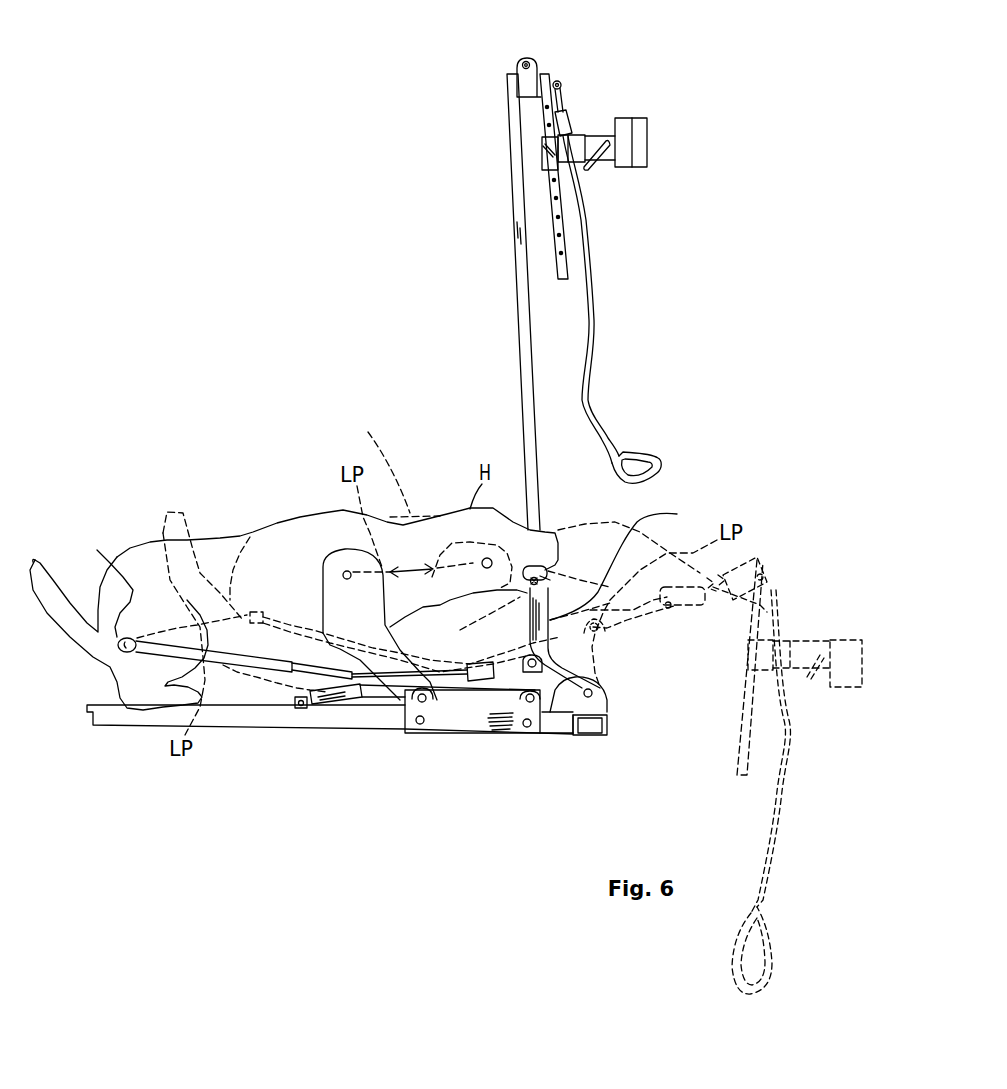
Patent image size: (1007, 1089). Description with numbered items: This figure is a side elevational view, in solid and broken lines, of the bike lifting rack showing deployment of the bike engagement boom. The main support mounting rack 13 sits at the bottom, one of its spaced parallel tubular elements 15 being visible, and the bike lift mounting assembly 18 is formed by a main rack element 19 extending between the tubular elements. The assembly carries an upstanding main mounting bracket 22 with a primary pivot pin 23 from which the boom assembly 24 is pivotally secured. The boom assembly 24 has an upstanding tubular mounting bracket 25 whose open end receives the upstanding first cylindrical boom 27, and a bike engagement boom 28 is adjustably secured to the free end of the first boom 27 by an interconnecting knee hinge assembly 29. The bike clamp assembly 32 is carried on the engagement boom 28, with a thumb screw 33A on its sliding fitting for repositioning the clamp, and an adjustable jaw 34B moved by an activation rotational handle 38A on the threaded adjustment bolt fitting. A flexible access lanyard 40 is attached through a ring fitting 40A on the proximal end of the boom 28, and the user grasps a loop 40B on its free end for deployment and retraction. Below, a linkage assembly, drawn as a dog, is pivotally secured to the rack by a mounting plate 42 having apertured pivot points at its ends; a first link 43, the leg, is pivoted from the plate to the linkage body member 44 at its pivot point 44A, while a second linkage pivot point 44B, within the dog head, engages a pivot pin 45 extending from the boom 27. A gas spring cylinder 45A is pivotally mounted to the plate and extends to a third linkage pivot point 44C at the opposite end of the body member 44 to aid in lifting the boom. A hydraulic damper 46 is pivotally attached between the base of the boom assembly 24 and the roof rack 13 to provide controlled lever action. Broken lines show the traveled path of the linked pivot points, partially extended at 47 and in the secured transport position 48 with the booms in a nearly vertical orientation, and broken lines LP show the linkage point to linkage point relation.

The main support mounting rack 13 is at (145, 744).
The tubular element 15 is at (587, 737).
The bike lift mounting assembly 18 is at (432, 466).
The main rack element 19 is at (328, 723).
The upstanding main mounting bracket 22 is at (595, 705).
The primary pivot pin 23 is at (603, 687).
The boom assembly 24 is at (450, 264).
The upstanding tubular mounting bracket 25 is at (625, 560).
The first cylindrical boom 27 is at (518, 333).
The bike engagement boom 28 is at (563, 243).
The knee hinge assembly 29 is at (511, 62).
The bike clamp assembly 32 is at (614, 114).
The thumb screw 33A is at (542, 153).
The adjustable jaw 34B is at (647, 150).
The activation rotational handle 38A is at (587, 170).
The flexible access lanyard 40 is at (590, 358).
The ring fitting 40A is at (560, 86).
The loop 40B is at (653, 455).
The mounting plate 42 is at (475, 712).
The first link 43 is at (337, 611).
The linkage body member 44 is at (221, 528).
The linkage body member pivot point 44A is at (331, 573).
The second linkage pivot point 44B is at (550, 573).
The third linkage pivot point 44C is at (110, 582).
The pivot pin 45 is at (556, 533).
The gas spring cylinder 45A is at (285, 661).
The hydraulic damper 46 is at (360, 690).
The partially extended position 47 is at (808, 635).
The secured transport position 48 is at (547, 308).